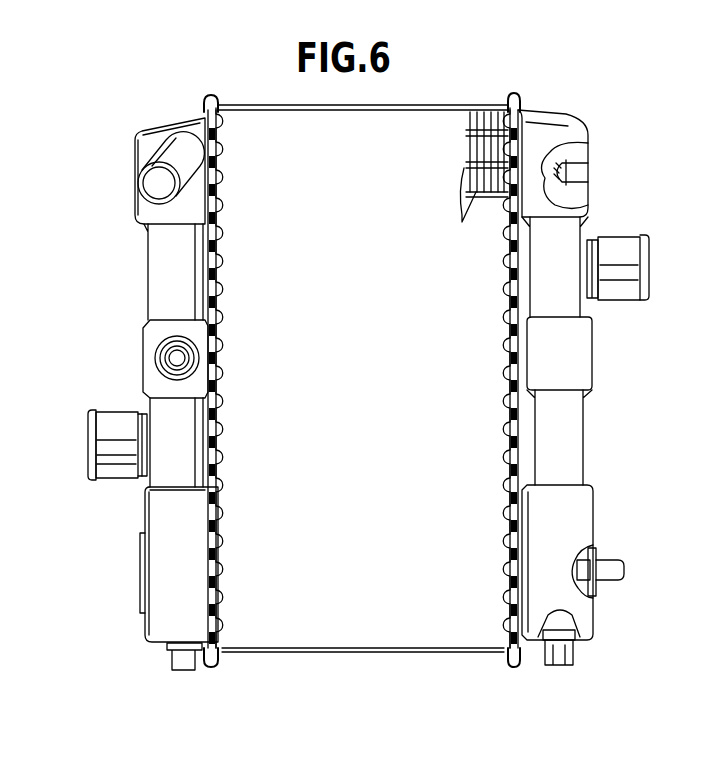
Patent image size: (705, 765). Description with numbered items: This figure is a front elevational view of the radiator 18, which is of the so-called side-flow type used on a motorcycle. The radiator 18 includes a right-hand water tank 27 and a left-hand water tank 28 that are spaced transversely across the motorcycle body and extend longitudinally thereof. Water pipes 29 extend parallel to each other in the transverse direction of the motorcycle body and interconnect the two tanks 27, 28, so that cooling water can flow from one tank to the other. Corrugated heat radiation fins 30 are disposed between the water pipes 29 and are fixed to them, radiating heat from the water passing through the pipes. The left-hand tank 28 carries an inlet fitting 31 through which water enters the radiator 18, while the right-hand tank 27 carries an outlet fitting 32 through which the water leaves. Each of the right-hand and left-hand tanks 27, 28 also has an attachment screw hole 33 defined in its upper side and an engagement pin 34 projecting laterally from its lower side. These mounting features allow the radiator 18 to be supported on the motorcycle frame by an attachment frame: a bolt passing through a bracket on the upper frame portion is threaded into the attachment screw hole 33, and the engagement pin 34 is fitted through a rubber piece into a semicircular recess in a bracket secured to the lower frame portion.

The radiator 18 is at (573, 110).
The right-hand water tank 27 is at (150, 285).
The left-hand water tank 28 is at (585, 355).
The water pipe 29 is at (478, 198).
The corrugated heat radiation fins 30 is at (468, 152).
The inlet fitting 31 is at (650, 262).
The outlet fitting 32 is at (115, 420).
The attachment screw hole 33 is at (592, 173).
The engagement pin 34 is at (602, 570).